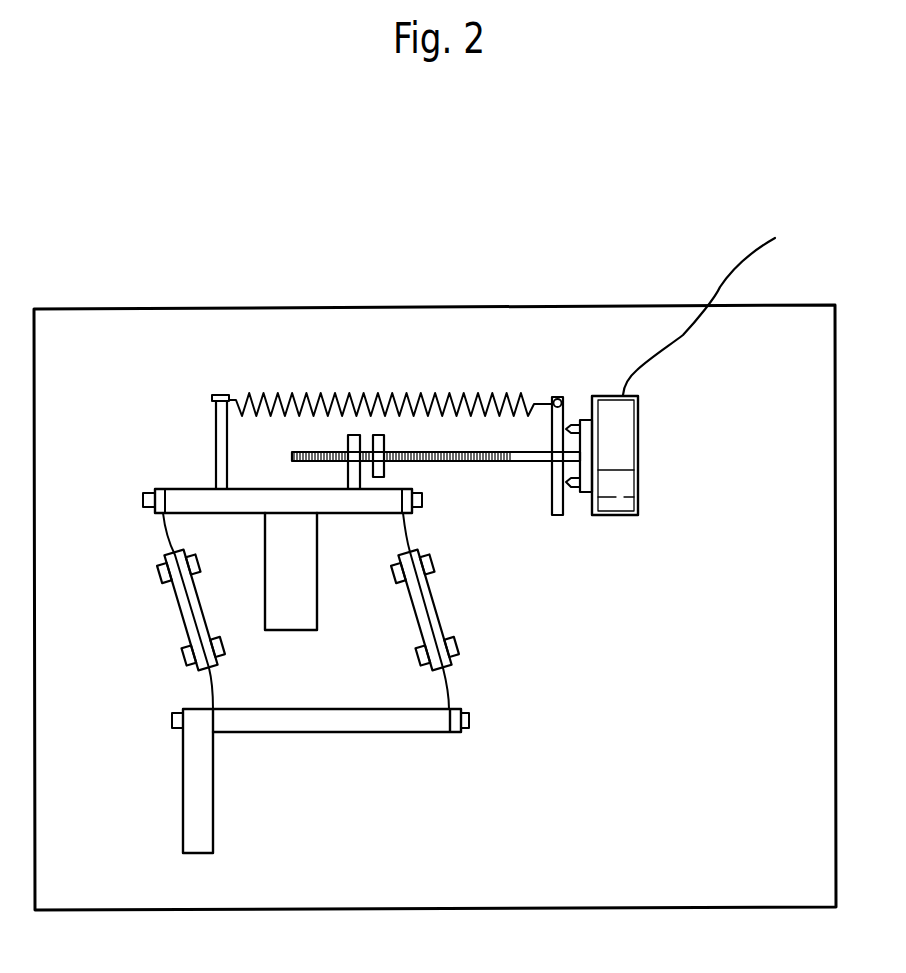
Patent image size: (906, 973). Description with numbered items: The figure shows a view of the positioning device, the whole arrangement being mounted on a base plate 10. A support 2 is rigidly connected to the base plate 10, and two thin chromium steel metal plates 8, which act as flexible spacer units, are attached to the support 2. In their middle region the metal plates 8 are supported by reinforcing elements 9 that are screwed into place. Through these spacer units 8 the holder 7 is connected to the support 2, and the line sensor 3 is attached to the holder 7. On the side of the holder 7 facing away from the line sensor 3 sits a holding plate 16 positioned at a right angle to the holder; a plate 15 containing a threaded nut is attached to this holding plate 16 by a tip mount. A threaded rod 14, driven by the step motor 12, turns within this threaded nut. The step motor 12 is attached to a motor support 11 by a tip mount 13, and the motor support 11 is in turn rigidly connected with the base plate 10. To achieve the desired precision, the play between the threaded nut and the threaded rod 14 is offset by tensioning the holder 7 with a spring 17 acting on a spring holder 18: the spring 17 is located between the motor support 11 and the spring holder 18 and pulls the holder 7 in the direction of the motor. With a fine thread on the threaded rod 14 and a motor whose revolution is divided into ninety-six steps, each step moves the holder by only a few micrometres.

The support 2 is at (266, 718).
The line sensor 3 is at (300, 585).
The holder 7 is at (183, 497).
The metal plates 8 is at (163, 533).
The reinforcing elements 9 is at (185, 627).
The base plate 10 is at (675, 823).
The motor support 11 is at (560, 517).
The step motor 12 is at (622, 448).
The tip mount 13 is at (571, 421).
The threaded rod 14 is at (490, 462).
The plate 15 is at (379, 435).
The holding plate 16 is at (354, 435).
The spring 17 is at (296, 393).
The spring holder 18 is at (222, 393).